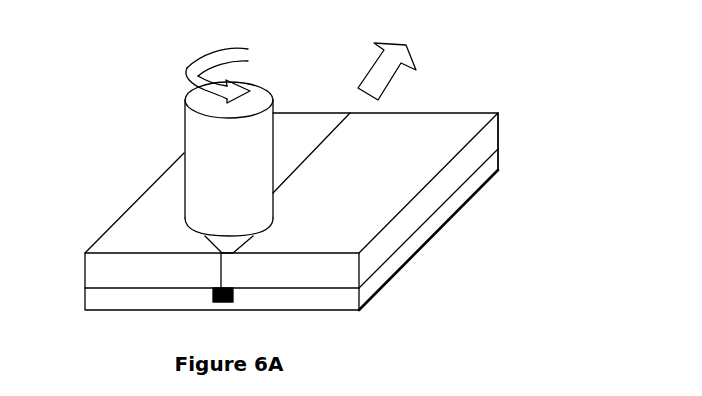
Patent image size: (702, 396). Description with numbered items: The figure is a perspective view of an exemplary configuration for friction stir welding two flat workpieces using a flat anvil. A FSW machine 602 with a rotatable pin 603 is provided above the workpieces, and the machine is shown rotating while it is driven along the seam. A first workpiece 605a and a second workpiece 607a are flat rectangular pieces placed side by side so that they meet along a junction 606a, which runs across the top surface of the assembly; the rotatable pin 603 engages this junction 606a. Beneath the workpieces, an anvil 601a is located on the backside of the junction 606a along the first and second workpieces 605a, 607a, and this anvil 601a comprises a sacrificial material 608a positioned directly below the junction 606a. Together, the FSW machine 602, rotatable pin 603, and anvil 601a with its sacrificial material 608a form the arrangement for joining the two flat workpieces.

The anvil 601a is at (414, 252).
The FSW machine 602 is at (173, 104).
The rotatable pin 603 is at (237, 253).
The first workpiece 605a is at (112, 224).
The junction 606a is at (331, 133).
The second workpiece 607a is at (499, 126).
The sacrificial material 608a is at (213, 295).